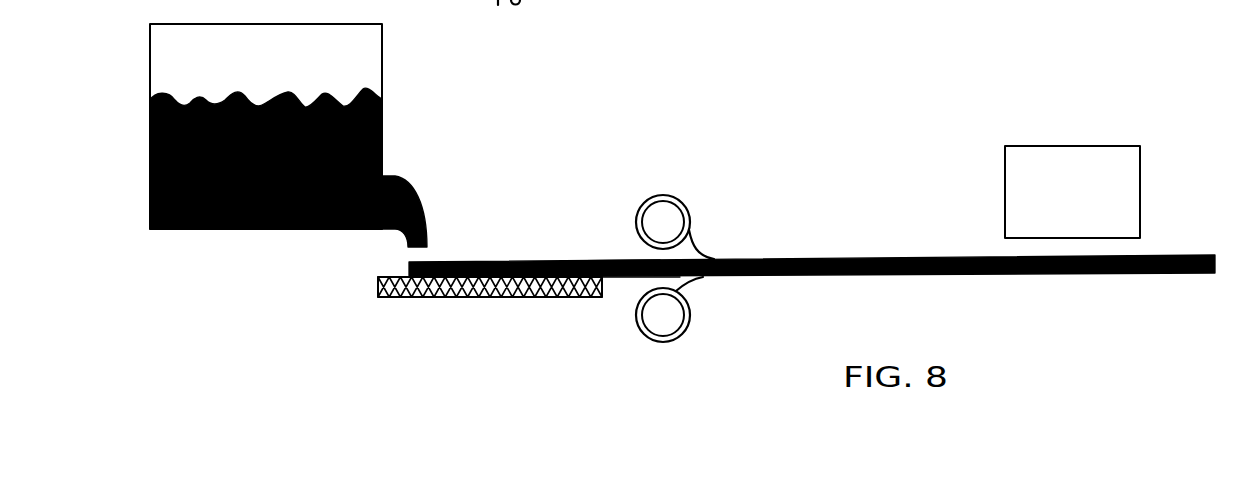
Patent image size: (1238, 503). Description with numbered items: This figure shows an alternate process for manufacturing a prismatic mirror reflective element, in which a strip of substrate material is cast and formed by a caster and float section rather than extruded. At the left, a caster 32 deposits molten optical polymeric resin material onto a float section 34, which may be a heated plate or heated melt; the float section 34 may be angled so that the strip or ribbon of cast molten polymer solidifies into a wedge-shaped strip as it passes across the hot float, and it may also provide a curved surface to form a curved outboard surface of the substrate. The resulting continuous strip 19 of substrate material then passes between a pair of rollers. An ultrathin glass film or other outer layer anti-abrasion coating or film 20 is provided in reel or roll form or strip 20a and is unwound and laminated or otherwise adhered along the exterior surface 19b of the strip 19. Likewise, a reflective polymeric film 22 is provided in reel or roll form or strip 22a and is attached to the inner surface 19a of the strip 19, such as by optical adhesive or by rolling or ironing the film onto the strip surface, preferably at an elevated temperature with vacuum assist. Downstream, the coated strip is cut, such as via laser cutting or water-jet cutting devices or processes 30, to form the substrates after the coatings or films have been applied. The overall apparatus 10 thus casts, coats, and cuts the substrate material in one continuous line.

The coating apparatus 10 is at (509, 2).
The strip 19 is at (582, 260).
The inner surface 19a is at (632, 278).
The exterior surface 19b is at (610, 260).
The ultrathin glass film 20 is at (695, 235).
The reel or roll form or strip 20a is at (662, 217).
The reflective polymeric film 22 is at (692, 280).
The reel or roll form or strip 22a is at (663, 320).
The cutting devices or processes 30 is at (1105, 168).
The caster 32 is at (348, 62).
The float section 34 is at (438, 297).